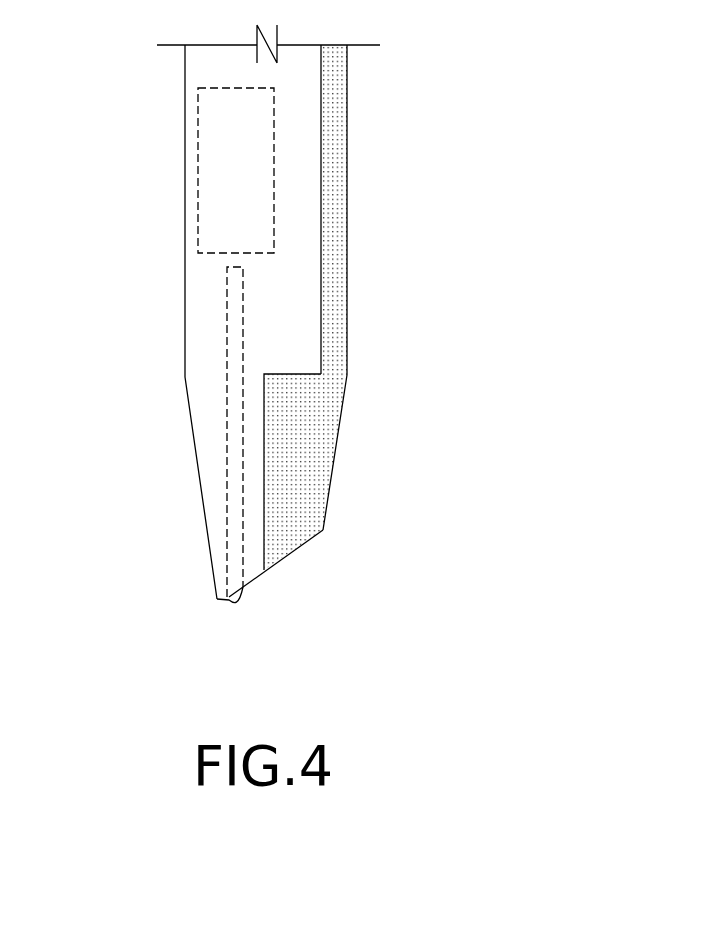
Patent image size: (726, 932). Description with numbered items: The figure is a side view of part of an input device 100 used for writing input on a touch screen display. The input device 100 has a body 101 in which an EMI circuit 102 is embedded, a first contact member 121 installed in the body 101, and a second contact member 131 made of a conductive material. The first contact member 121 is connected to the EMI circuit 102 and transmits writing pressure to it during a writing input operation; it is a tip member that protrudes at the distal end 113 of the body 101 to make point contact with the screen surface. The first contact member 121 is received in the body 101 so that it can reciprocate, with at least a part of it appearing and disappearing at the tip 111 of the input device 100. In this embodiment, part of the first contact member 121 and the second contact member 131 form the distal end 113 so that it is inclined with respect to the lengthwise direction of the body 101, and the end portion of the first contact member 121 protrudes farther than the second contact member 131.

The input device 100 is at (402, 85).
The body 101 is at (185, 168).
The EMI circuit 102 is at (275, 168).
The tip 111 is at (198, 474).
The distal end 113 is at (293, 555).
The first contact member 121 is at (233, 604).
The second contact member 131 is at (318, 438).